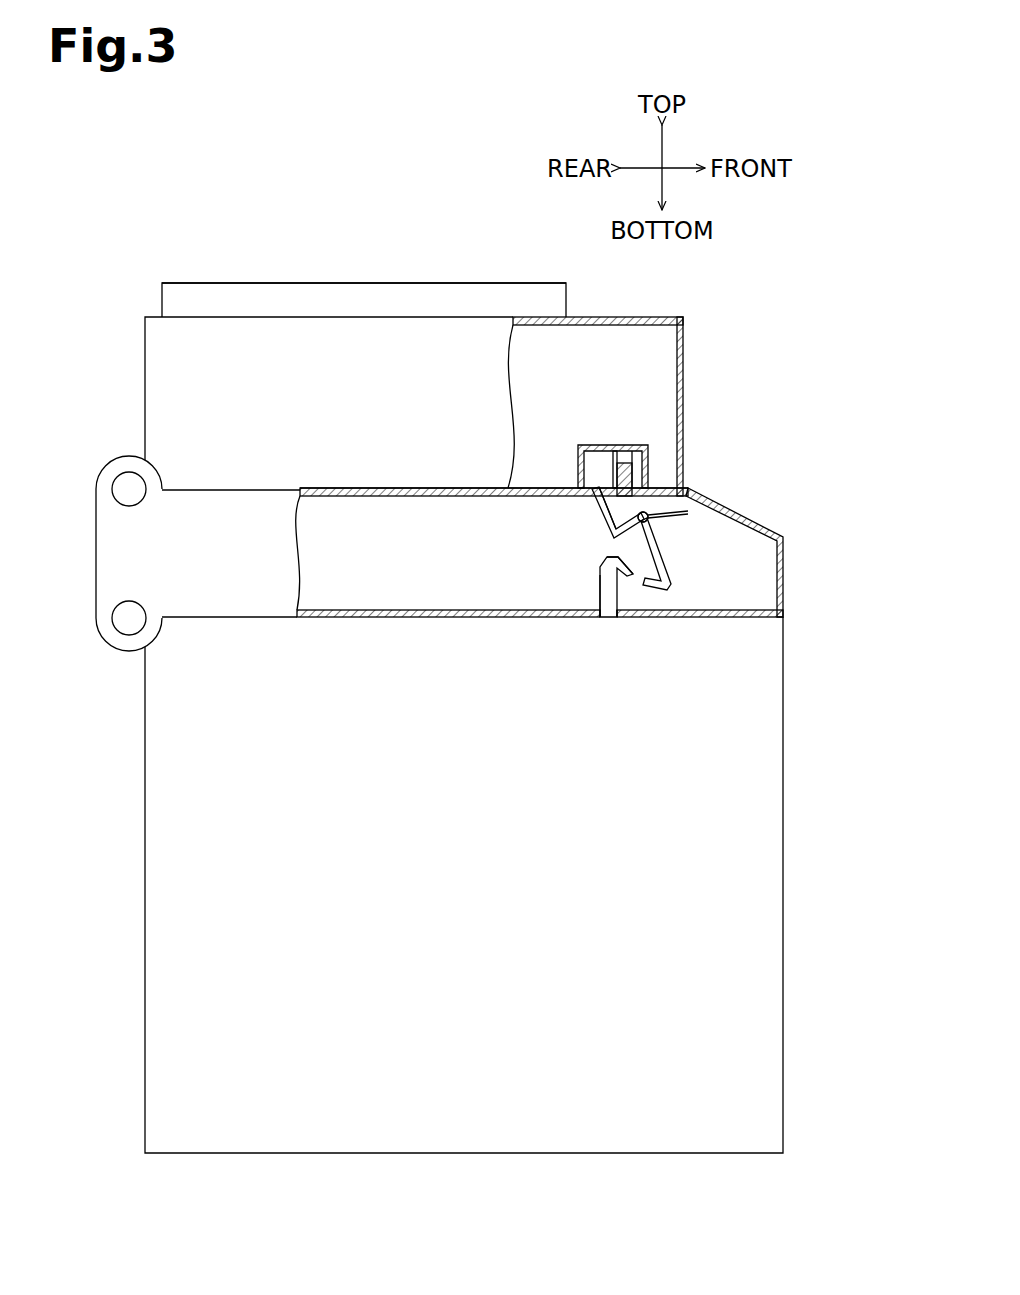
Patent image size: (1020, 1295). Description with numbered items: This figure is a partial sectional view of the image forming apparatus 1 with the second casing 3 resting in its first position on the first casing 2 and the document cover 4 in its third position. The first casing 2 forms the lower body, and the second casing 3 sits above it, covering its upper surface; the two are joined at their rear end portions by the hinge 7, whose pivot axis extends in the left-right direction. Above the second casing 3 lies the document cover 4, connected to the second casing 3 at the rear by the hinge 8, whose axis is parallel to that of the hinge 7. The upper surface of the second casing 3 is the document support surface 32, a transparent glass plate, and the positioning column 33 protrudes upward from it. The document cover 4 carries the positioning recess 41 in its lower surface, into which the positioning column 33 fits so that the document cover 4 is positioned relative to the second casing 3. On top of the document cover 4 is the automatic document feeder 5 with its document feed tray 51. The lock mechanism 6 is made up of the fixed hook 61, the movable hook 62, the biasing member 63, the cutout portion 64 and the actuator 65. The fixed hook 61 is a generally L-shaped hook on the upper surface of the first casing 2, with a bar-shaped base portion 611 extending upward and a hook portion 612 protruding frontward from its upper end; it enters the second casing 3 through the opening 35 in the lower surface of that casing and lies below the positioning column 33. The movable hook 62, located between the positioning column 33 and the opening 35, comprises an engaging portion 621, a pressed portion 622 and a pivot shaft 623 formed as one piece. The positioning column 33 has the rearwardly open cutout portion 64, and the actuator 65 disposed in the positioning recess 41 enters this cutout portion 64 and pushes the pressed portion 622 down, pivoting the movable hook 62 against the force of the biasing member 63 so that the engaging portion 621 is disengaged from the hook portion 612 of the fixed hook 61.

The image forming apparatus 1 is at (104, 182).
The first casing 2 is at (790, 856).
The second casing 3 is at (790, 572).
The document cover 4 is at (690, 453).
The automatic document feeder 5 is at (536, 281).
The document feed tray 51 is at (458, 283).
The lock mechanism 6 is at (580, 544).
The hinge 7 is at (110, 610).
The hinge 8 is at (108, 486).
The document support surface 32 is at (398, 488).
The positioning column 33 is at (627, 458).
The opening 35 is at (636, 618).
The positioning recess 41 is at (632, 458).
The fixed hook 61 is at (590, 583).
The base portion 611 is at (600, 590).
The hook portion 612 is at (608, 556).
The movable hook 62 is at (590, 508).
The engaging portion 621 is at (670, 556).
The pressed portion 622 is at (602, 520).
The pivot shaft 623 is at (658, 519).
The biasing member 63 is at (672, 513).
The cutout portion 64 is at (613, 463).
The actuator 65 is at (578, 462).